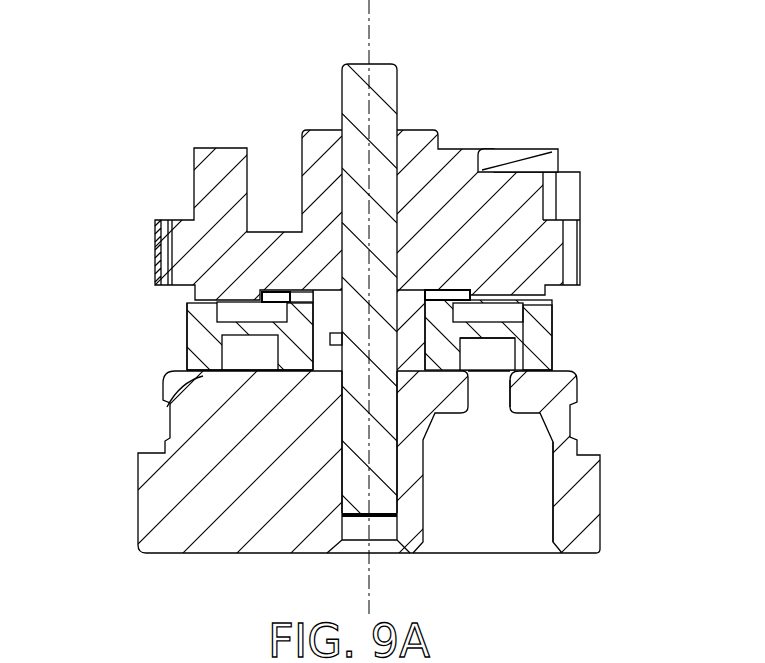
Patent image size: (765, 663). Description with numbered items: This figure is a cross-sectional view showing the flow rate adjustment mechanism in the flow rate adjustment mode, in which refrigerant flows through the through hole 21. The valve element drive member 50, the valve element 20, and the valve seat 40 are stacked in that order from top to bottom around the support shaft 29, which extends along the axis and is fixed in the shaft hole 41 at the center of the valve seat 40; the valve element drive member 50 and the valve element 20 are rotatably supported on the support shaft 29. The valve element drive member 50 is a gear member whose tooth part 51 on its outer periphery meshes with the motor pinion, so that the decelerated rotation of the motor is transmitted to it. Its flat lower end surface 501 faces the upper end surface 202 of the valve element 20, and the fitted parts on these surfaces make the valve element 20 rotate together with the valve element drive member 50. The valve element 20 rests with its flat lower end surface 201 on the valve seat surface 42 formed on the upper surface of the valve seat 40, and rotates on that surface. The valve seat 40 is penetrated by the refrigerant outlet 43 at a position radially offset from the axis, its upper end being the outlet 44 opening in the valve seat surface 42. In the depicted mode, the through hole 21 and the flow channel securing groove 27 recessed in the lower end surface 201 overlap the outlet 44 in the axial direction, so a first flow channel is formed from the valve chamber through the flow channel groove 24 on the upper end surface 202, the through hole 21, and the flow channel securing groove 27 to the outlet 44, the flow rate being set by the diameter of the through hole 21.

The support shaft 29 is at (387, 73).
The valve element drive member 50 is at (178, 148).
The tooth part 51 is at (157, 223).
The upper end surface 202 is at (313, 297).
The lower end surface 501 is at (187, 313).
The valve element 20 is at (160, 339).
The valve seat surface 42 is at (183, 368).
The lower end surface 201 is at (178, 391).
The valve seat 40 is at (118, 512).
The shaft hole 41 is at (352, 522).
The refrigerant outlet 43 is at (545, 548).
The outlet 44 is at (508, 383).
The flow channel groove 24 is at (553, 300).
The through hole 21 is at (548, 343).
The flow channel securing groove 27 is at (513, 360).